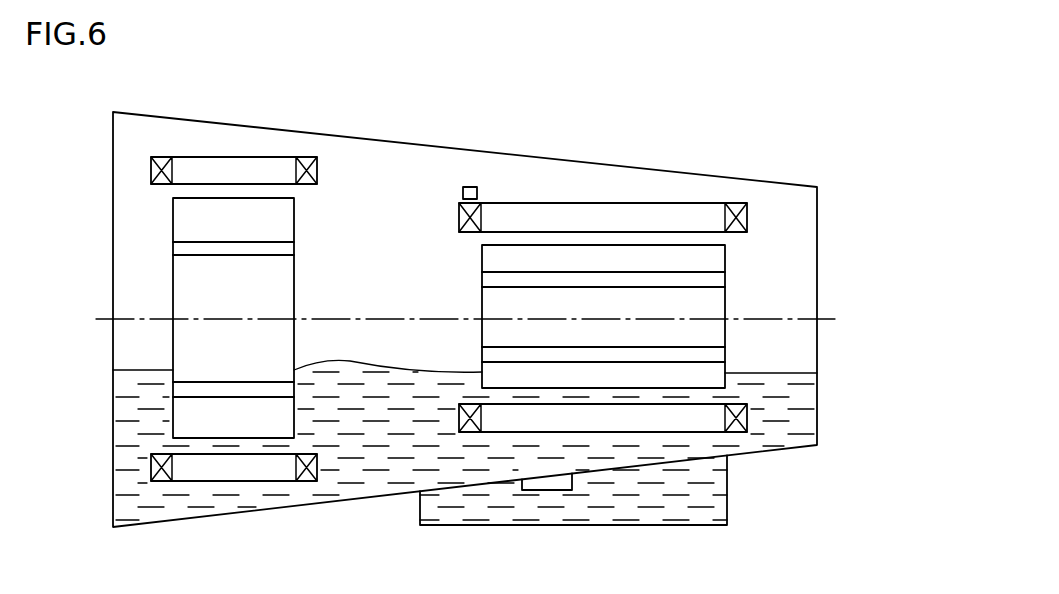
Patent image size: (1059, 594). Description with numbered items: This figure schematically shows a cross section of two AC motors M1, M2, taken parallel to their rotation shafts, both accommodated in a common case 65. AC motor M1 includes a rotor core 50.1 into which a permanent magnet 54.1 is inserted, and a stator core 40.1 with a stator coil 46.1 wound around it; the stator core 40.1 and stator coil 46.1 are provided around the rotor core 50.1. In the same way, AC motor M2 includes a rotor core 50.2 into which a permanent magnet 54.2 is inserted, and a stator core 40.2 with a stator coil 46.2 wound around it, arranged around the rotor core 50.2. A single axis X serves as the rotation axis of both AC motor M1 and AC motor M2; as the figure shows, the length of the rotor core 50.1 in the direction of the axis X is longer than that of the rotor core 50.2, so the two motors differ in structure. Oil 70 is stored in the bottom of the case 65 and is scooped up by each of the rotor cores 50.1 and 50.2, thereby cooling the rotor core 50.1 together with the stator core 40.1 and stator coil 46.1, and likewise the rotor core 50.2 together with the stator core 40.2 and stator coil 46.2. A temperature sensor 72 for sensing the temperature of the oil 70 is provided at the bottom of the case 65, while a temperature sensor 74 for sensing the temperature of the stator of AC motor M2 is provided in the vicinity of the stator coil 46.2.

The stator core 40.1 is at (232, 165).
The stator core 40.2 is at (570, 215).
The stator coil 46.1 is at (162, 157).
The stator coil 46.2 is at (459, 214).
The rotor core 50.1 is at (186, 287).
The rotor core 50.2 is at (712, 330).
The permanent magnet 54.1 is at (186, 249).
The permanent magnet 54.2 is at (712, 280).
The case 65 is at (819, 224).
The oil 70 is at (800, 417).
The temperature sensor 72 is at (545, 490).
The temperature sensor 74 is at (471, 187).
The AC motor M1 is at (311, 260).
The AC motor M2 is at (749, 305).
The axis X is at (454, 320).